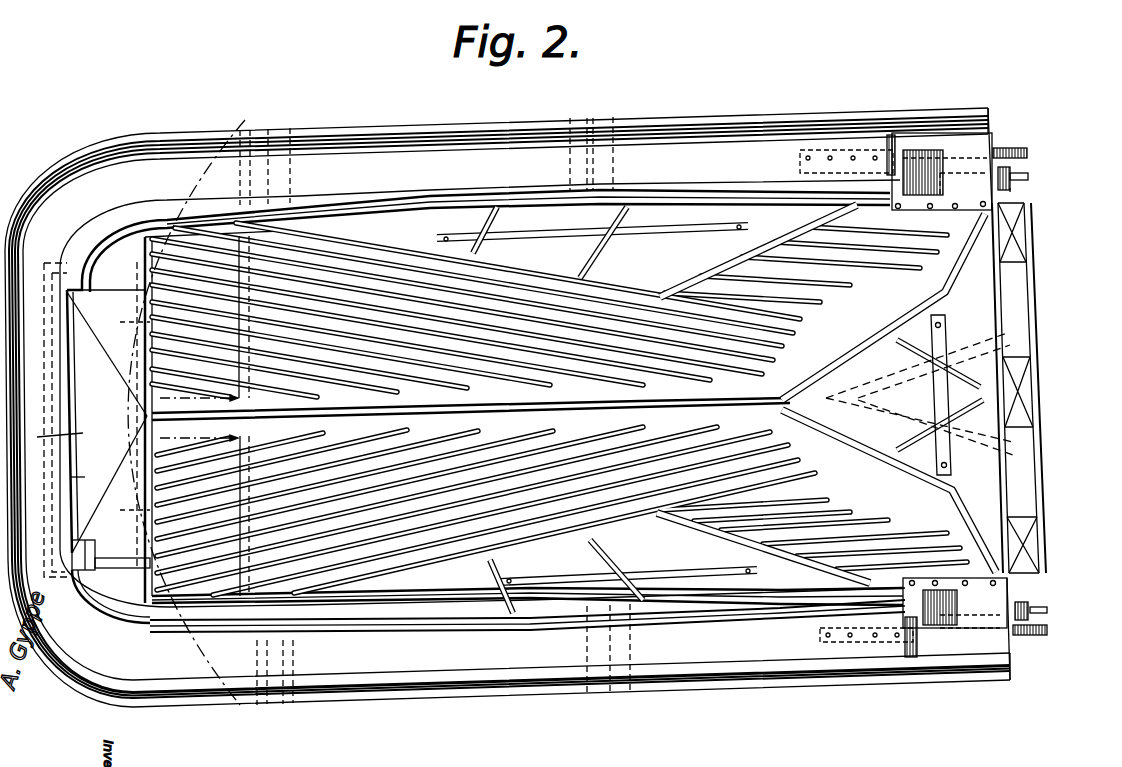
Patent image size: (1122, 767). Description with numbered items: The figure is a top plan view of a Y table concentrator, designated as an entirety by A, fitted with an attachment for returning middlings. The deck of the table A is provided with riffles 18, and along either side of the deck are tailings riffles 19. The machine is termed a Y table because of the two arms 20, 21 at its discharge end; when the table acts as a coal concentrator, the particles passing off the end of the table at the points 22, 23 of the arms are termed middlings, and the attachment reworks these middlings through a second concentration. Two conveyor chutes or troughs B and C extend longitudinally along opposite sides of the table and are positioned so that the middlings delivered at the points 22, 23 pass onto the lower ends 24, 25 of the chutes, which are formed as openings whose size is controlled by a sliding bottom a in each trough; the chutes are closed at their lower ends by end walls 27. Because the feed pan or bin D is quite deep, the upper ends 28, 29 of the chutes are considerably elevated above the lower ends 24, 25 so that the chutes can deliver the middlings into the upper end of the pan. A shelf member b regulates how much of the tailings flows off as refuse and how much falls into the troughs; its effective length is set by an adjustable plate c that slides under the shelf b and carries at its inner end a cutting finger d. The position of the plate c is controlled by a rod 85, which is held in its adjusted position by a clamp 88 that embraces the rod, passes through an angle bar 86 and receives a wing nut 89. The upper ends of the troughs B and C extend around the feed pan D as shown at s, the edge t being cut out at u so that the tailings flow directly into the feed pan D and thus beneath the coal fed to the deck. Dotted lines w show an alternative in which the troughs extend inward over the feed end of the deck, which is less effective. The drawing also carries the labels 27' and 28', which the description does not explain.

The riffles 18 is at (445, 455).
The tailings riffles 19 is at (668, 287).
The arm 20 is at (765, 270).
The arm 21 is at (880, 515).
The point 22 is at (997, 228).
The point 23 is at (957, 575).
The lower end of chute 24 is at (933, 137).
The lower end of chute 25 is at (985, 652).
The end wall 27 is at (1040, 382).
The end rail extension 27' is at (1054, 378).
The upper end of chute 28 is at (370, 398).
The clamp bar 28' is at (1054, 383).
The upper end of chute 29 is at (263, 673).
The rod 85 is at (1029, 177).
The angle bar 86 is at (1010, 172).
The clamp 88 is at (1027, 603).
The wing nut 89 is at (1010, 190).
The sliding bottom a is at (893, 138).
The shelf member b is at (949, 380).
The adjustable plate c is at (930, 387).
The cutting finger d is at (856, 404).
The trough extension around feed pan s is at (67, 431).
The edge t is at (82, 227).
The cut-out u is at (84, 476).
The dotted-line trough extension w is at (126, 415).
The Y table A is at (507, 305).
The conveyor chute B is at (507, 407).
The conveyor chute C is at (580, 640).
The feed pan D is at (67, 397).